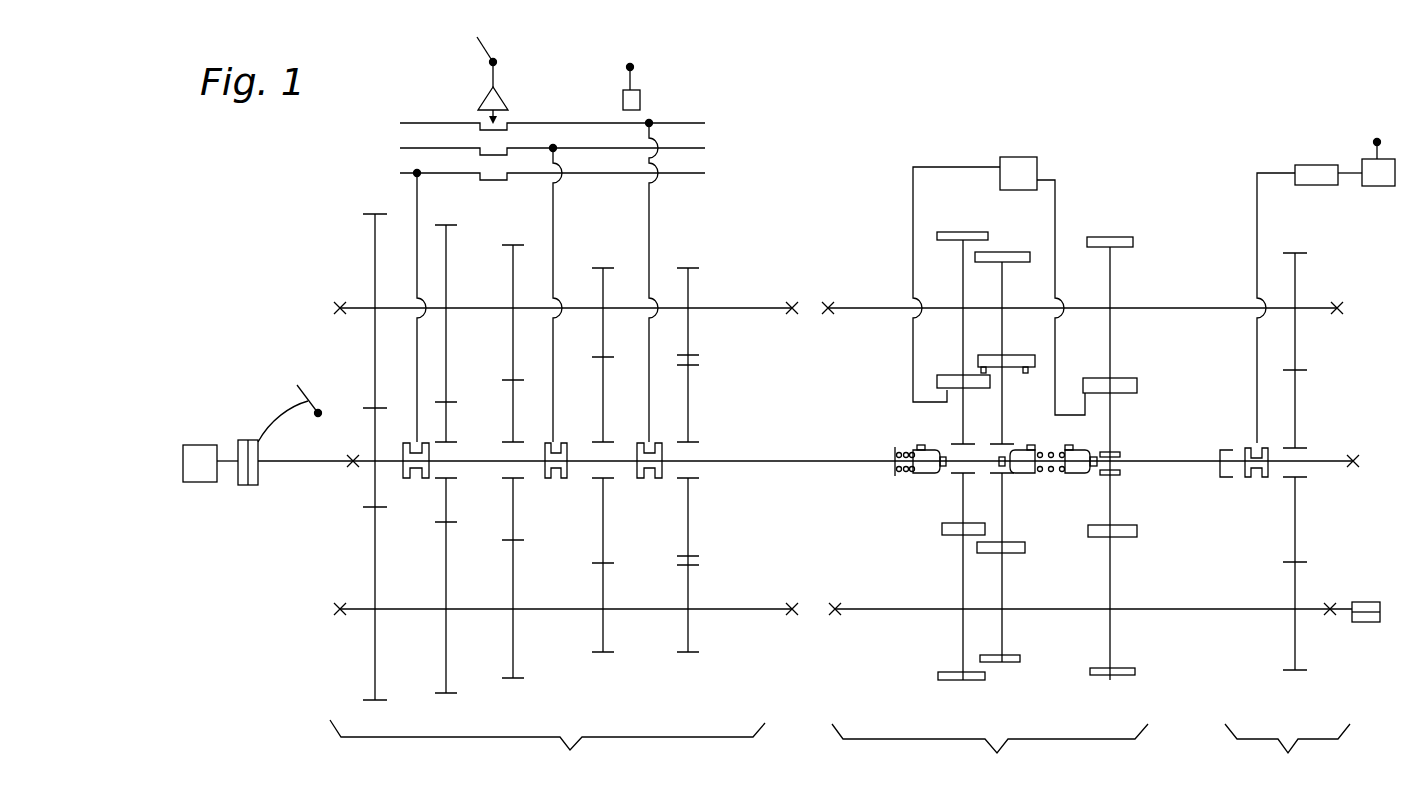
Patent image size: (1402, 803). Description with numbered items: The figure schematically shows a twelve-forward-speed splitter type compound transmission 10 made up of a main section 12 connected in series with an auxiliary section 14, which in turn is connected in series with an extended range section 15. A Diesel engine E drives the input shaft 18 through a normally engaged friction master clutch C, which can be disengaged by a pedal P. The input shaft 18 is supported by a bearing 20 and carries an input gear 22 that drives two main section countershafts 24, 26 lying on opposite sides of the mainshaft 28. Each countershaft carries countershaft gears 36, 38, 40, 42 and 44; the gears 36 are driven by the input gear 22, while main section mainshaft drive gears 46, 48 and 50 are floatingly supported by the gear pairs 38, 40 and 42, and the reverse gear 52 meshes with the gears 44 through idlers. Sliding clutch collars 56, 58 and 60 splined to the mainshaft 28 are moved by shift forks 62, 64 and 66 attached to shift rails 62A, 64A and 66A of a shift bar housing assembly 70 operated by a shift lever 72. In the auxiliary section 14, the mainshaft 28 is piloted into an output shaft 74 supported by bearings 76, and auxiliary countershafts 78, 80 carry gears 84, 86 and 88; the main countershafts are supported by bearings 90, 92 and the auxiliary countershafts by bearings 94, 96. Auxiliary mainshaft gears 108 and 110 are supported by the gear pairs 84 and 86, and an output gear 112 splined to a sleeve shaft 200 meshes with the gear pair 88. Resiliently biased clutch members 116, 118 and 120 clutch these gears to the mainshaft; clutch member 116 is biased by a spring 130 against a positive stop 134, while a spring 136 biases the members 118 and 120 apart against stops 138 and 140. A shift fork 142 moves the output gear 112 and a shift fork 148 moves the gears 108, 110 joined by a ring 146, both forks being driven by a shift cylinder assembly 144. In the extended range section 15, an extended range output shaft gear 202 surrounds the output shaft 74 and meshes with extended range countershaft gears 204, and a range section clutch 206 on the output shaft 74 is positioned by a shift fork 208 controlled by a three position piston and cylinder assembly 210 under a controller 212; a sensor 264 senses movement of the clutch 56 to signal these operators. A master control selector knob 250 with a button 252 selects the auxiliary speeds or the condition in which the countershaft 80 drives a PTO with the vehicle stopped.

The transmission 10 is at (821, 207).
The main section 12 is at (547, 753).
The auxiliary section 14 is at (990, 755).
The extended range section 15 is at (1287, 755).
The input shaft 18 is at (322, 459).
The bearing 20 is at (353, 470).
The input gear 22 is at (375, 422).
The main section countershaft 24 is at (483, 310).
The main section countershaft 26 is at (475, 608).
The mainshaft 28 is at (480, 463).
The countershaft gear 36 is at (373, 233).
The countershaft gear 38 is at (448, 246).
The countershaft gear 40 is at (513, 280).
The countershaft gear 42 is at (603, 280).
The countershaft gear 44 is at (688, 280).
The main section mainshaft drive gear 46 is at (448, 432).
The main section mainshaft drive gear 48 is at (513, 432).
The main section mainshaft drive gear 50 is at (604, 432).
The reverse gear 52 is at (688, 434).
The sliding clutch collar 56 is at (651, 480).
The sliding clutch collar 58 is at (560, 480).
The sliding clutch collar 60 is at (427, 479).
The shift fork 62 is at (650, 222).
The shift rail 62A is at (677, 123).
The shift fork 64 is at (555, 432).
The shift rail 64A is at (597, 150).
The shift fork 66 is at (417, 375).
The shift rail 66A is at (532, 175).
The shift bar housing assembly 70 is at (397, 139).
The shift lever 72 is at (495, 79).
The output shaft 74 is at (1325, 460).
The bearings 76 is at (1353, 472).
The auxiliary section countershaft 78 is at (1020, 305).
The auxiliary section countershaft 80 is at (1050, 608).
The auxiliary countershaft gear 84 is at (962, 296).
The auxiliary countershaft gear 86 is at (1001, 353).
The auxiliary countershaft gear 88 is at (1110, 290).
The bearing 90 is at (340, 300).
The bearing 92 is at (792, 300).
The bearing 94 is at (830, 300).
The bearing 96 is at (1338, 320).
The auxiliary section mainshaft gear 108 is at (965, 392).
The auxiliary section mainshaft gear 110 is at (1002, 392).
The output gear 112 is at (1113, 413).
The clutch member 116 is at (905, 474).
The clutch member 118 is at (1025, 475).
The clutch member 120 is at (1090, 478).
The spring 130 is at (912, 450).
The positive stop 134 is at (945, 480).
The spring 136 is at (1047, 452).
The stop 138 is at (1000, 472).
The stop 140 is at (1120, 455).
The shift fork 142 is at (1055, 366).
The shift cylinder assembly 144 is at (1018, 163).
The ring 146 is at (962, 372).
The shift fork 148 is at (913, 205).
The sleeve shaft 200 is at (1180, 460).
The extended range output shaft gear 202 is at (1296, 410).
The extended range countershaft gear 204 is at (1296, 272).
The extended range section clutch 206 is at (1251, 484).
The shift fork 208 is at (1257, 345).
The three position piston and cylinder assembly 210 is at (1308, 175).
The controller 212 is at (1375, 186).
The master control selector knob 250 is at (496, 60).
The button 252 is at (480, 47).
The sensor 264 is at (623, 100).
The master clutch C is at (255, 491).
The engine E is at (200, 463).
The pedal P is at (310, 382).
The element PTO is at (1363, 599).